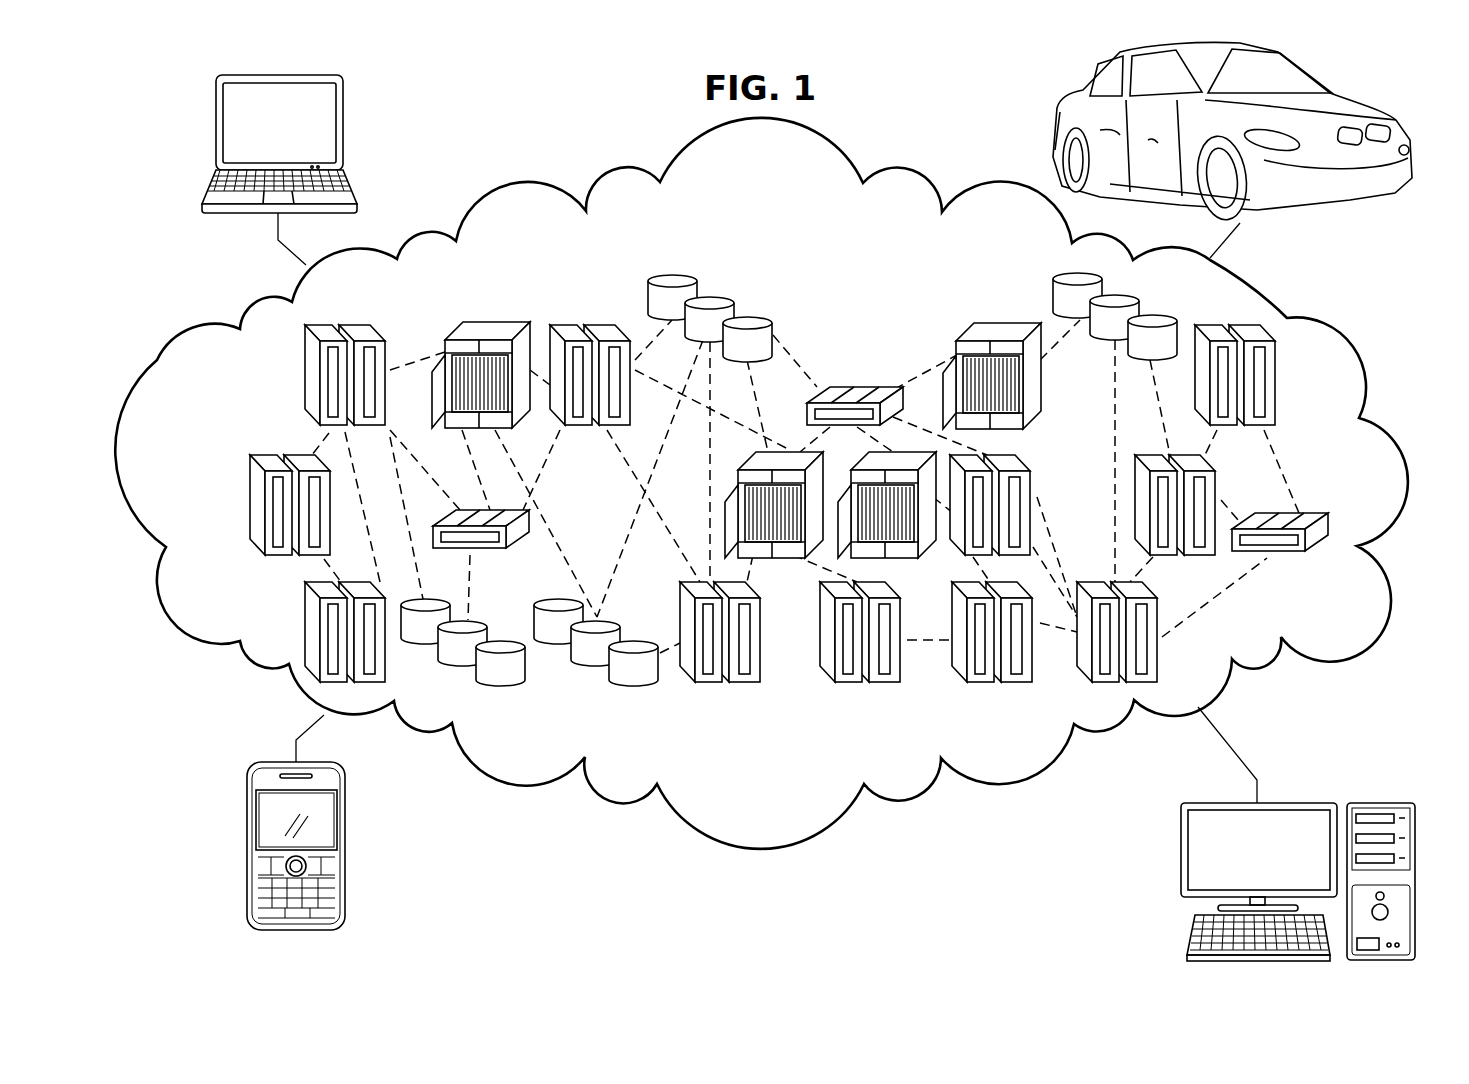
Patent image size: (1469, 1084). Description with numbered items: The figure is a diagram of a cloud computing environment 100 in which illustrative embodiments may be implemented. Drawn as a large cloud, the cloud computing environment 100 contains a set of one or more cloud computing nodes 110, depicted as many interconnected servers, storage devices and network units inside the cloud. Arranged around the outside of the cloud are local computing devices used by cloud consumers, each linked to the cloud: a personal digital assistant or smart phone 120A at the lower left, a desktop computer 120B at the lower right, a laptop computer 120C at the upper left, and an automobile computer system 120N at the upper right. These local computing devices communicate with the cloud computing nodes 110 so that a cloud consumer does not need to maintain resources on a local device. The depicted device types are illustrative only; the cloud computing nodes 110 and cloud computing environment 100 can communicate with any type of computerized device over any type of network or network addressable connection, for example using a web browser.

The cloud computing environment 100 is at (938, 812).
The cloud computing nodes 110 is at (704, 840).
The personal digital assistant or smart phone 120A is at (246, 843).
The desktop computer 120B is at (1310, 798).
The laptop computer 120C is at (345, 127).
The automobile computer system 120N is at (1380, 219).